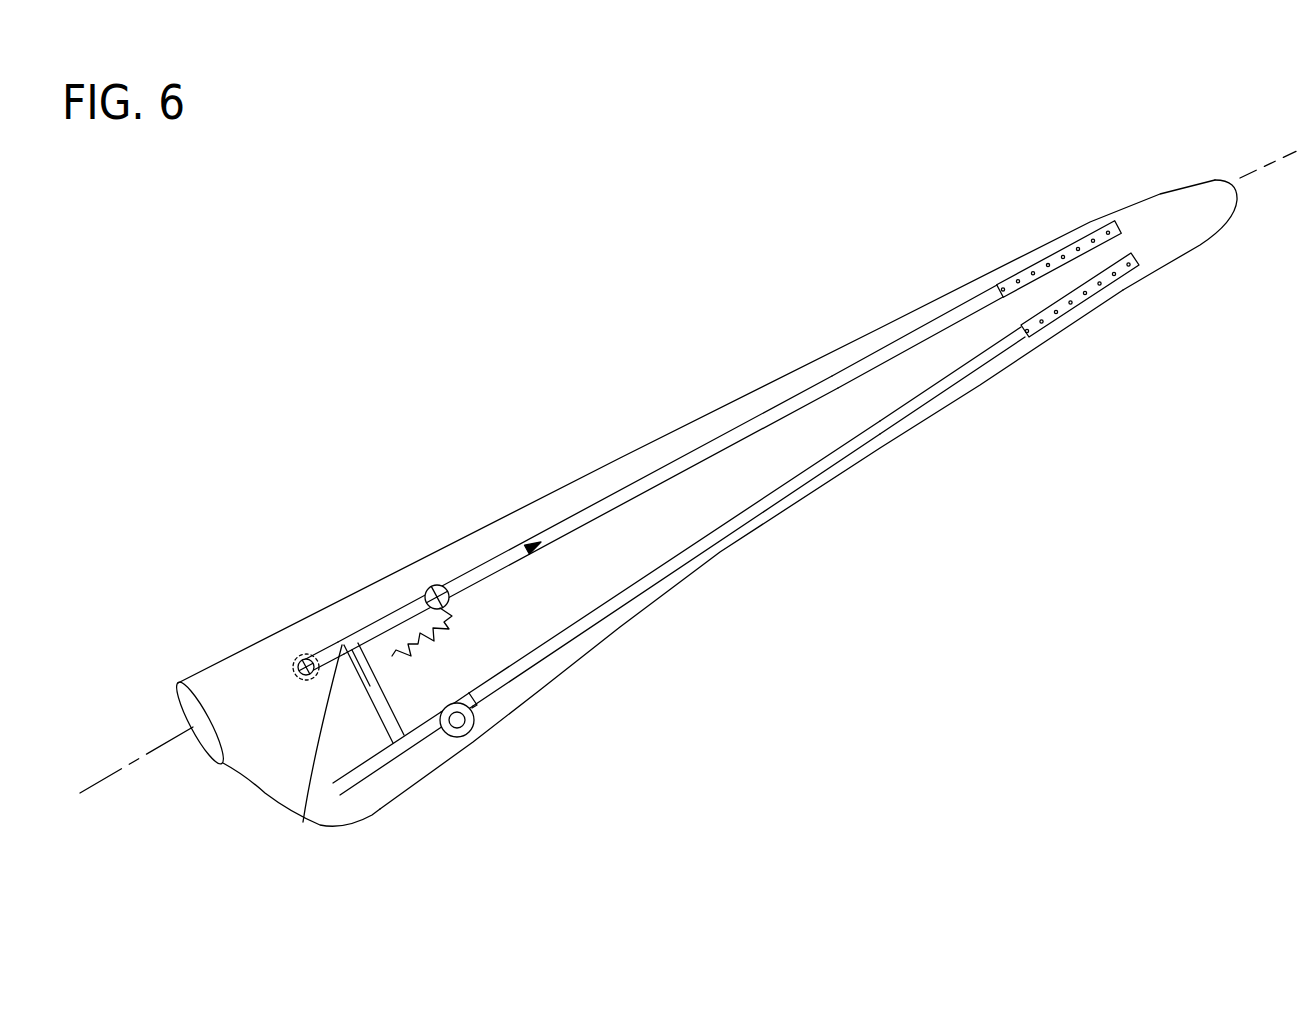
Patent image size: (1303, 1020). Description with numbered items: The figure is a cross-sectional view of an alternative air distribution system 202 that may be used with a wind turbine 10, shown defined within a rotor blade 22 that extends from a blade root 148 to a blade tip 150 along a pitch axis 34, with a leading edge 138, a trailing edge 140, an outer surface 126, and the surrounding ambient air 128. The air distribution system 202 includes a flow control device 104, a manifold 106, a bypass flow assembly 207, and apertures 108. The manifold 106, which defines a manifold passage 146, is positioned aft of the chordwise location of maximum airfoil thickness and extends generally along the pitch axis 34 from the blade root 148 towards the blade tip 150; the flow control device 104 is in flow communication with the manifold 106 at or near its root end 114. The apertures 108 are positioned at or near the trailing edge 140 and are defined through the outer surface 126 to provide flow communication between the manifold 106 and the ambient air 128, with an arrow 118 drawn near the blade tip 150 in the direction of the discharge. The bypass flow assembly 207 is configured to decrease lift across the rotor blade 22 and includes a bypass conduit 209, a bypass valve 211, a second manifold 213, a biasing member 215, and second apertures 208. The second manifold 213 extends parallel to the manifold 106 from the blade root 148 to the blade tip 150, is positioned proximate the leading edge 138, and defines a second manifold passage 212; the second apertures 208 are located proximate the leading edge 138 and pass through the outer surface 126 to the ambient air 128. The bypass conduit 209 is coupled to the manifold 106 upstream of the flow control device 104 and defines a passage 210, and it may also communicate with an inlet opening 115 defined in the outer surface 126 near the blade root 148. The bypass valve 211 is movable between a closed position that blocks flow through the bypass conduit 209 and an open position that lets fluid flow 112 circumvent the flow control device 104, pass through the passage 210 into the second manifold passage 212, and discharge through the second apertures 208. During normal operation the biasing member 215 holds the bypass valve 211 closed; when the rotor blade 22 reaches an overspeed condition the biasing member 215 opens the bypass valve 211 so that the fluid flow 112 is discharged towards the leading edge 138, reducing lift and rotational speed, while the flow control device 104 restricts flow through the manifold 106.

The wind turbine 10 is at (283, 358).
The rotor blade 22 is at (863, 178).
The pitch axis 34 is at (100, 778).
The flow control device 104 is at (473, 740).
The manifold 106 is at (703, 543).
The aperture 108 is at (1097, 283).
The fluid flow 112 is at (498, 562).
The root end 114 is at (389, 773).
The inlet opening 115 is at (296, 659).
The flow direction 118 is at (1143, 259).
The outer surface 126 is at (1153, 217).
The ambient air 128 is at (1105, 586).
The leading edge 138 is at (693, 420).
The trailing edge 140 is at (873, 452).
The manifold passage 146 is at (983, 358).
The blade root 148 is at (222, 772).
The blade tip 150 is at (1233, 181).
The air distribution system 202 is at (277, 527).
The bypass flow assembly 207 is at (378, 550).
The second apertures 208 is at (1015, 283).
The bypass conduit 209 is at (303, 822).
The passage 210 is at (343, 643).
The bypass valve 211 is at (432, 588).
The second manifold passage 212 is at (835, 380).
The second manifold 213 is at (636, 493).
The biasing member 215 is at (446, 630).